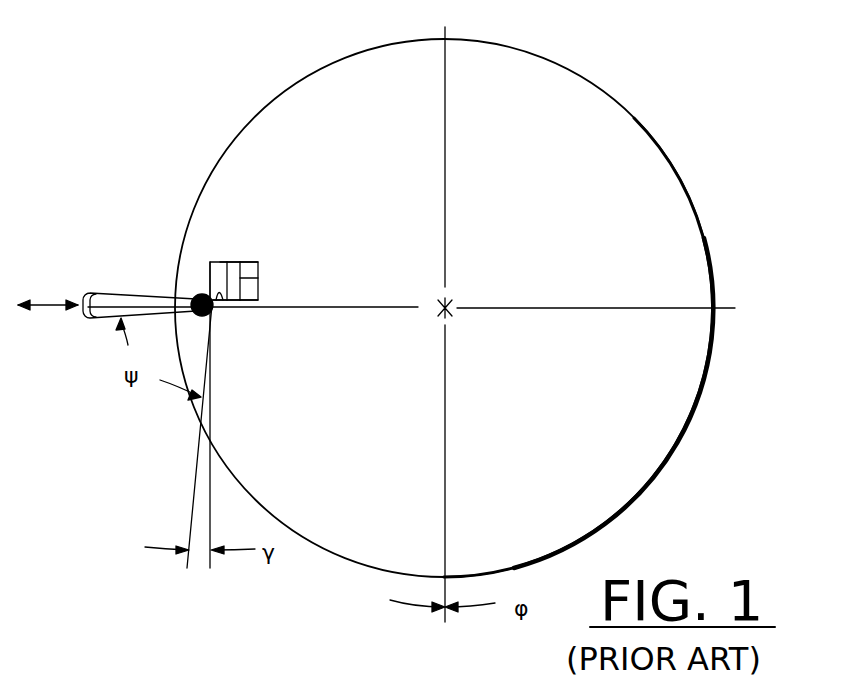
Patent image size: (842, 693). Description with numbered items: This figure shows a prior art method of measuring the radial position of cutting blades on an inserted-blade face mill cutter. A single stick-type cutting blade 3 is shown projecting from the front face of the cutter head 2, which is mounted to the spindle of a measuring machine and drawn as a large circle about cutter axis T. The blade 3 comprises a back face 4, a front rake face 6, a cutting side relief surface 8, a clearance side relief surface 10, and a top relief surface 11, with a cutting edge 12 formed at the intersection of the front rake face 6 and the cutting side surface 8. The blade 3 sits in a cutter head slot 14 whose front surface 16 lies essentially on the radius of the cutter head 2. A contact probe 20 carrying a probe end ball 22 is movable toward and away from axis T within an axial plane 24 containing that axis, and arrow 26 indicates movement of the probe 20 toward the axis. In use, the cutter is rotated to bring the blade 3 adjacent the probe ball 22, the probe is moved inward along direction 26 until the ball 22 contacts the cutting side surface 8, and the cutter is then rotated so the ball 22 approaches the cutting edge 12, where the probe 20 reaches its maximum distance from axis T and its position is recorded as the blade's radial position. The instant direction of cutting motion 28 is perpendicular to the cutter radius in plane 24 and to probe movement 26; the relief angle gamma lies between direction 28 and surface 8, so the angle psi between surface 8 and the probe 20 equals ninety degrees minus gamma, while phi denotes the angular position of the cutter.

The cutter head 2 is at (505, 144).
The cutting blade 3 is at (250, 247).
The back face 4 is at (250, 262).
The front rake face 6 is at (242, 301).
The cutting side relief surface 8 is at (225, 263).
The clearance side relief surface 10 is at (248, 278).
The top relief surface 11 is at (235, 263).
The cutting edge 12 is at (226, 308).
The cutter head slot 14 is at (202, 277).
The front surface 16 is at (228, 304).
The contact probe 20 is at (98, 292).
The probe end ball 22 is at (193, 296).
The axial plane 24 is at (383, 309).
The arrow indicating probe movement 26 is at (50, 308).
The instant direction of cutting motion 28 is at (212, 428).